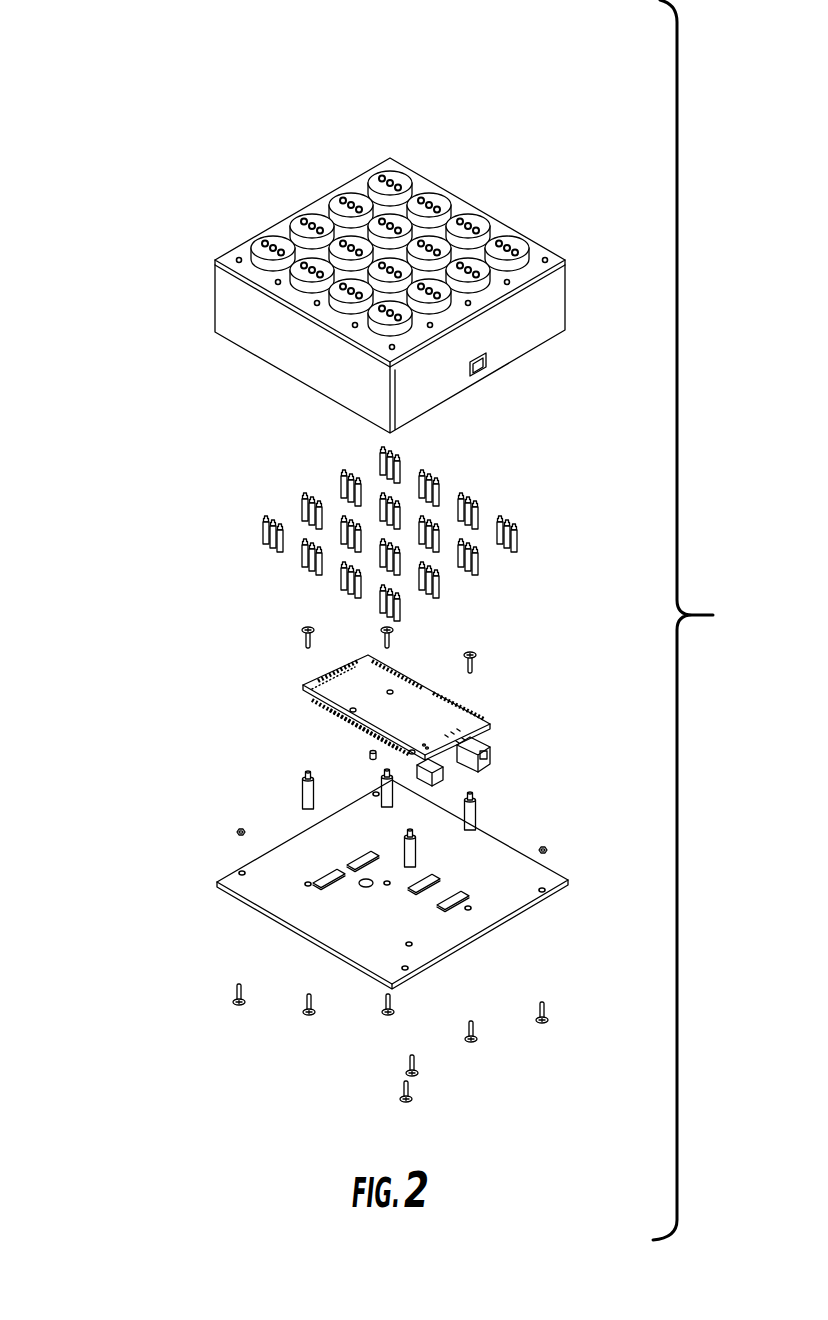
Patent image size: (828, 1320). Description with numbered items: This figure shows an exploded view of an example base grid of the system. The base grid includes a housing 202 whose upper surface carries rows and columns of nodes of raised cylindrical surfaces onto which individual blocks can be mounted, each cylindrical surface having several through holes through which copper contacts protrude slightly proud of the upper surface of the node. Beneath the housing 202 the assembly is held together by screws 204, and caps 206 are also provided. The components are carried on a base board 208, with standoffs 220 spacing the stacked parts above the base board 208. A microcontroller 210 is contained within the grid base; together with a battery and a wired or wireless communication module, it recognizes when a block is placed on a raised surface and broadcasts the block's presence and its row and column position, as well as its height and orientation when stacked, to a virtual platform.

The housing 202 is at (214, 302).
The screws 204 is at (300, 640).
The caps 206 is at (234, 833).
The base board 208 is at (214, 886).
The microcontroller 210 is at (498, 723).
The standoffs 220 is at (493, 822).